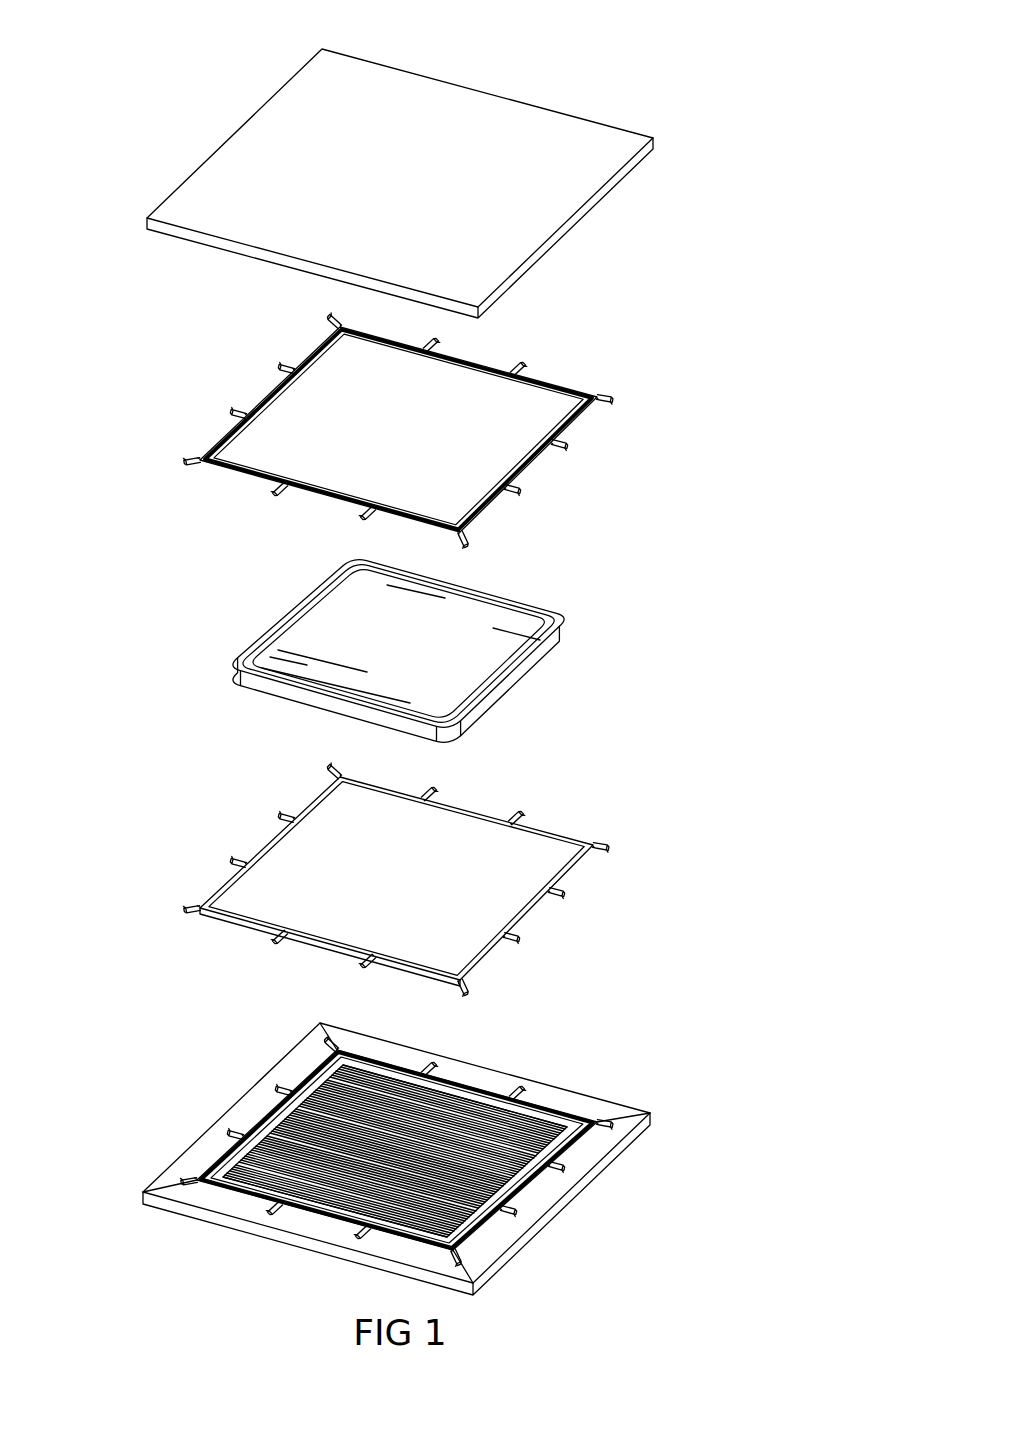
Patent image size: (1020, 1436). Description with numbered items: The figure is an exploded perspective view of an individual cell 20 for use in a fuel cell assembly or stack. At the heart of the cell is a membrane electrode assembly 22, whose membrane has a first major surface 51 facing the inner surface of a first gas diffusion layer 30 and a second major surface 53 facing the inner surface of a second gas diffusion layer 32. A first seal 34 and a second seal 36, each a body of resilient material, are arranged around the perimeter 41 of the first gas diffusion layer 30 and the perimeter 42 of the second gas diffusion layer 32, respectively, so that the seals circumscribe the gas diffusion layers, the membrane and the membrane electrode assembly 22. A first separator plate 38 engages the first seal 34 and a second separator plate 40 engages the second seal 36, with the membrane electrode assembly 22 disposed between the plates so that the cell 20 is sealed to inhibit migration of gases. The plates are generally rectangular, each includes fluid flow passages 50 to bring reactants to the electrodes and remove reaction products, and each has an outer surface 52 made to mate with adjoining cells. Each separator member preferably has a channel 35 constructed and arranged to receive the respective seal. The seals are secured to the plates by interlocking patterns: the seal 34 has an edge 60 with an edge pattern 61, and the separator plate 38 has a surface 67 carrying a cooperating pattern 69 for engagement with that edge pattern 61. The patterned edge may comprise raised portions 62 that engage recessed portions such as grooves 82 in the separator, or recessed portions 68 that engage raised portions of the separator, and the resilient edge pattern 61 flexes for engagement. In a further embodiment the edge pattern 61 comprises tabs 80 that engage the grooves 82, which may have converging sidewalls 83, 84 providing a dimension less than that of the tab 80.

The individual cell 20 is at (728, 90).
The membrane electrode assembly 22 is at (746, 645).
The first gas diffusion layer 30 is at (262, 698).
The second gas diffusion layer 32 is at (285, 645).
The first seal 34 is at (498, 955).
The channel 35 is at (543, 1103).
The second seal 36 is at (595, 407).
The first separator plate 38 is at (195, 1212).
The second separator plate 40 is at (600, 190).
The perimeter of the first gas diffusion layer 41 is at (232, 682).
The perimeter of the second gas diffusion layer 42 is at (543, 610).
The fluid flow passages 50 is at (332, 1115).
The first major surface 51 is at (413, 743).
The outer surfaces 52 is at (515, 118).
The second major surface 53 is at (437, 622).
The edge 60 is at (590, 867).
The edge pattern 61 is at (532, 932).
The raised portions 62 is at (465, 992).
The surface 67 is at (633, 1113).
The recessed portions 68 is at (272, 943).
The cooperating pattern 69 is at (202, 1147).
The tabs 80 is at (182, 912).
The grooves 82 is at (572, 1168).
The converging sidewall 83 is at (492, 1250).
The converging sidewall 84 is at (515, 1210).